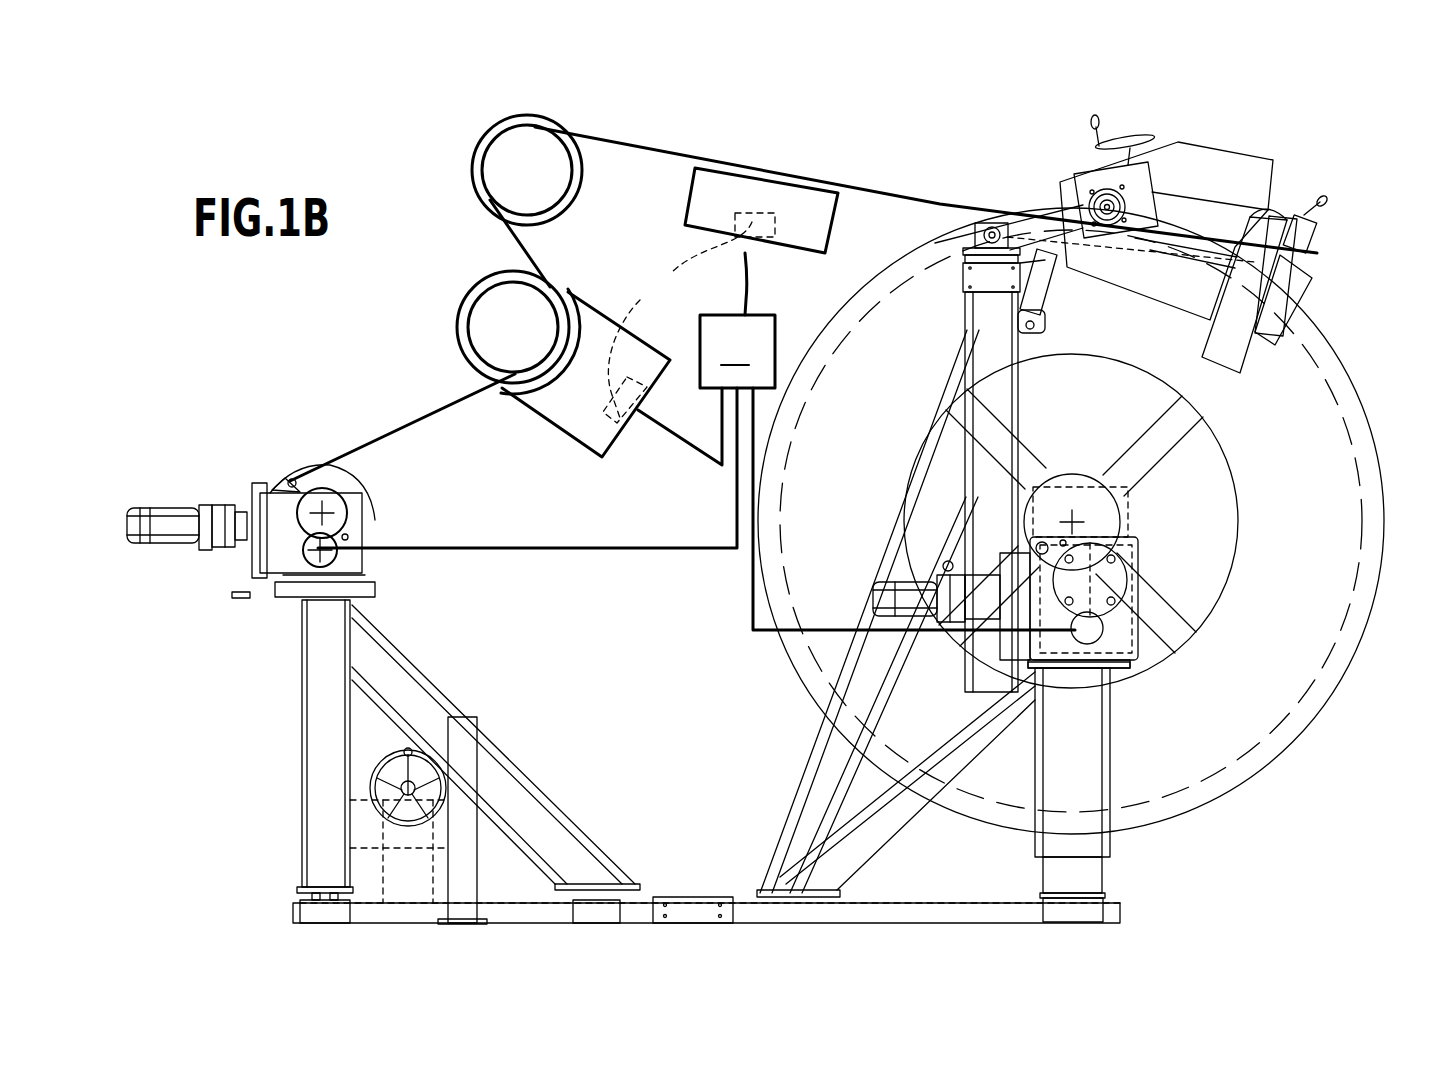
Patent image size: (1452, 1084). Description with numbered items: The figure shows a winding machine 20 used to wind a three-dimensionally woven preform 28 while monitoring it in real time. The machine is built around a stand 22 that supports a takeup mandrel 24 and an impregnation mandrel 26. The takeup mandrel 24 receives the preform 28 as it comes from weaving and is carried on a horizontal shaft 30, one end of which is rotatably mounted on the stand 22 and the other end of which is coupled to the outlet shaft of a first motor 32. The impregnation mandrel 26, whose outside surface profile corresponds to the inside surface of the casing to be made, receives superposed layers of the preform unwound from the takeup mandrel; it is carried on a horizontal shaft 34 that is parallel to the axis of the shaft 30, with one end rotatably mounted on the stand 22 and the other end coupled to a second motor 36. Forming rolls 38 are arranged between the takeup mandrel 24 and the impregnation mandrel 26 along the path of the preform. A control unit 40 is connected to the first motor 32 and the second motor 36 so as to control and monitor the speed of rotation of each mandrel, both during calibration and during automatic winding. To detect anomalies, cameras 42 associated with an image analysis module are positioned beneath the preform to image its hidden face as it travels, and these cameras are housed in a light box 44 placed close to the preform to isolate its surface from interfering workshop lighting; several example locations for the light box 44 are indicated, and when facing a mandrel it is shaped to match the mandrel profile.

The winding machine 20 is at (776, 136).
The stand 22 is at (796, 778).
The takeup mandrel 24 is at (269, 509).
The impregnation mandrel 26 is at (1352, 382).
The preform 28 is at (391, 427).
The horizontal shaft 30 is at (340, 500).
The first motor 32 is at (234, 560).
The horizontal shaft 34 is at (1074, 516).
The second motor 36 is at (1138, 571).
The forming rolls 38 is at (472, 203).
The control unit 40 is at (696, 441).
The cameras 42 is at (680, 320).
The light box 44 is at (839, 222).